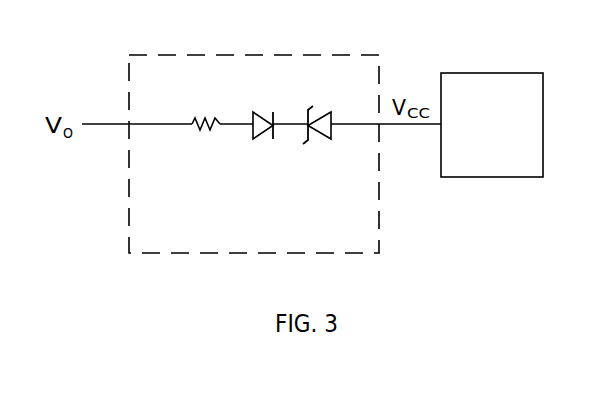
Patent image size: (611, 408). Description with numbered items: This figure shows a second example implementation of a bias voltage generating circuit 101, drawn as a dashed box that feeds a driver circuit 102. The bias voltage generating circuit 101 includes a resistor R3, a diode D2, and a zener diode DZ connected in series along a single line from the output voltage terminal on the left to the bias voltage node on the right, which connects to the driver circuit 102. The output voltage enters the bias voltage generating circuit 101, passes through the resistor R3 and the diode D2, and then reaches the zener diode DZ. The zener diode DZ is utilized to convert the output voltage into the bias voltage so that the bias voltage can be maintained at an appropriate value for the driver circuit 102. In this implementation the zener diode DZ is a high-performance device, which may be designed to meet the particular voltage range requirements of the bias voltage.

The bias voltage generating circuit 101 is at (285, 154).
The driver circuit 102 is at (511, 166).
The resistor R3 is at (205, 109).
The diode D2 is at (265, 110).
The zener diode DZ is at (320, 112).